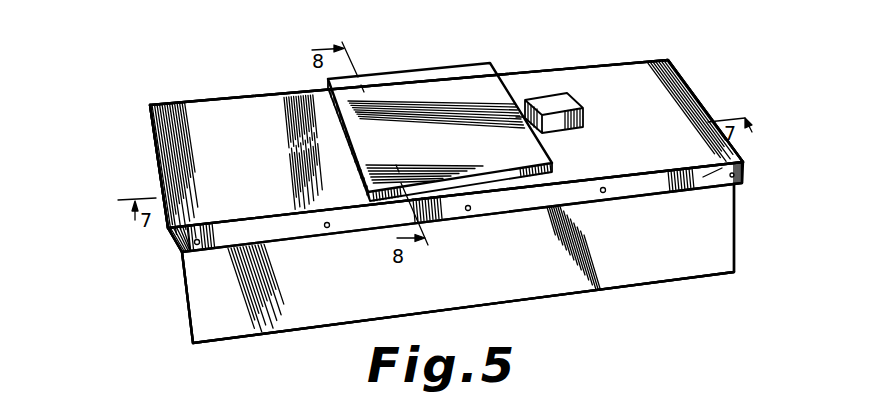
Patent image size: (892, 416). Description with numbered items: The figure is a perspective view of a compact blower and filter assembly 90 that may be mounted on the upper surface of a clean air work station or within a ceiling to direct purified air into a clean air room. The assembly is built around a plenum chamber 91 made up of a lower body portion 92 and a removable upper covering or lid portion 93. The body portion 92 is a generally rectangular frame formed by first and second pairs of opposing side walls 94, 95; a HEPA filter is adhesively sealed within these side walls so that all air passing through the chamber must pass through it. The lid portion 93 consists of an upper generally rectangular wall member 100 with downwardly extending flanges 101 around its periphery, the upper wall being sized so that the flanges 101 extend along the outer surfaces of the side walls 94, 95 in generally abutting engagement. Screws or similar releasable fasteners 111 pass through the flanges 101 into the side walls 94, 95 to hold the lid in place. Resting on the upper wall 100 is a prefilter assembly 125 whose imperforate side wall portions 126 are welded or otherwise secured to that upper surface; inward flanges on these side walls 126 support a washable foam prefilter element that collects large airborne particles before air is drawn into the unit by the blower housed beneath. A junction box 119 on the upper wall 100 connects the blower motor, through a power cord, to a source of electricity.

The compact blower and filter assembly 90 is at (138, 110).
The plenum chamber 91 is at (736, 246).
The lower body portion 92 is at (200, 293).
The lid portion 93 is at (630, 60).
The first pair of opposing side walls 94 is at (471, 275).
The second pair of opposing side walls 95 is at (165, 242).
The upper wall member 100 is at (655, 158).
The downwardly extending flanges 101 is at (733, 159).
The releasable fasteners 111 is at (743, 178).
The junction box 119 is at (584, 100).
The prefilter assembly 125 is at (364, 73).
The imperforate side wall portions 126 is at (328, 103).